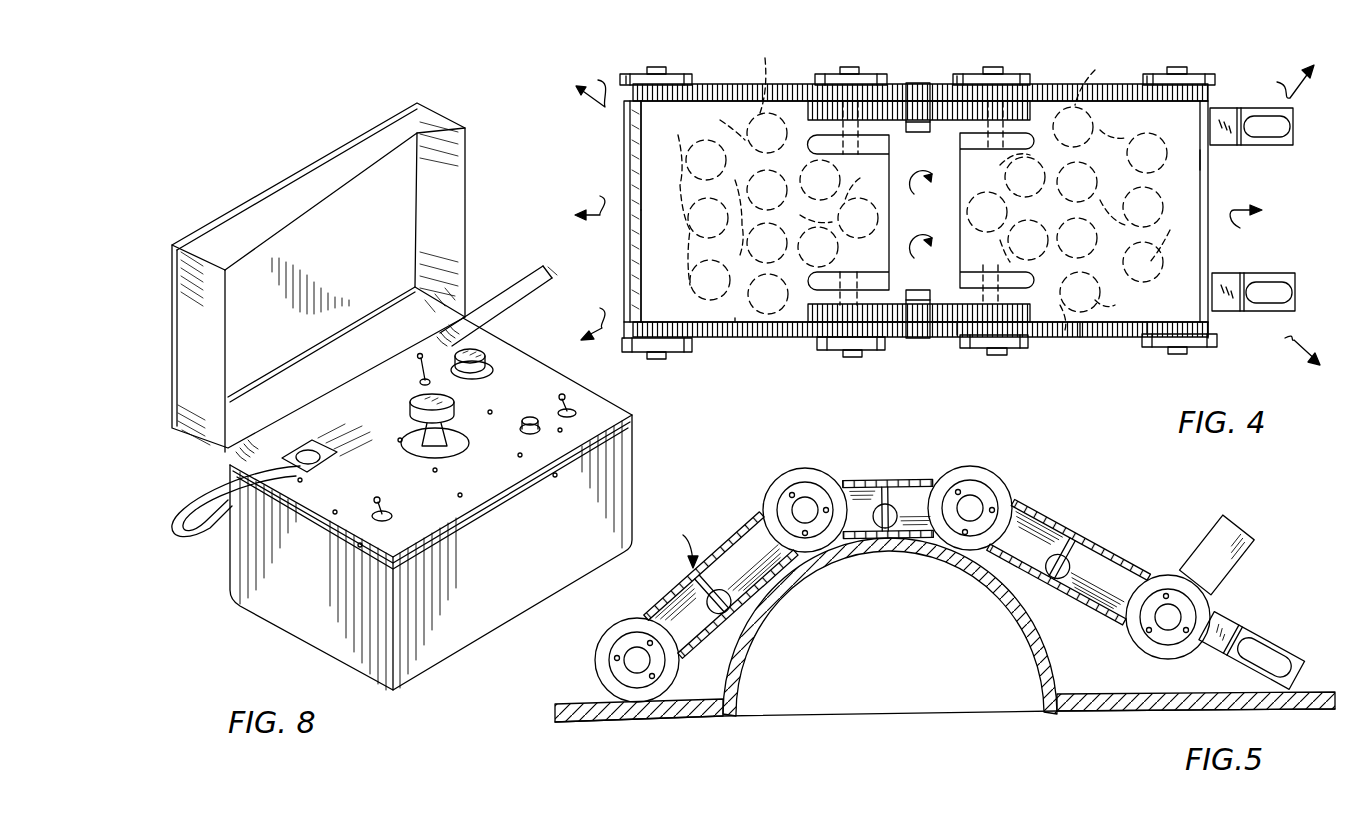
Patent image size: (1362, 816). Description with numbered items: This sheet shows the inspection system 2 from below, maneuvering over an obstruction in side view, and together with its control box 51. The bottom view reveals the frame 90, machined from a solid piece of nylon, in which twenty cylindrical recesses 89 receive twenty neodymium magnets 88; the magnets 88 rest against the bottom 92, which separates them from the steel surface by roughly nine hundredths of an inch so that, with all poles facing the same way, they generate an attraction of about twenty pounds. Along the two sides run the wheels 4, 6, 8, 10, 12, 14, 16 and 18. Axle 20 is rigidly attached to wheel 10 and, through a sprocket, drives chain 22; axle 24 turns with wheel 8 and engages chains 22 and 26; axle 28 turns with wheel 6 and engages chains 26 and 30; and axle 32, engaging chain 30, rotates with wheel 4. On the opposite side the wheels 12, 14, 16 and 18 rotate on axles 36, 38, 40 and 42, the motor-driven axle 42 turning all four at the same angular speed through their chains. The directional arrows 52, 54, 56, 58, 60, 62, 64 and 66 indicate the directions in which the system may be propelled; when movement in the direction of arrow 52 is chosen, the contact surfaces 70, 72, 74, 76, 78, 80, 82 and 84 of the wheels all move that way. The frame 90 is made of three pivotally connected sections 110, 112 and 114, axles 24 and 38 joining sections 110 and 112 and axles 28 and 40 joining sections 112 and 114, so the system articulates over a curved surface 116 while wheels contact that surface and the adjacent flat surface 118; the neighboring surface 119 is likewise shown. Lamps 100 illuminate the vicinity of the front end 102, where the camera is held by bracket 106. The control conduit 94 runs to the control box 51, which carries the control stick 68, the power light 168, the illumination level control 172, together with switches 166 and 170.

In FIG. 4, the inspection system 2 is at (612, 233).
In FIG. 5, the inspection system 2 is at (682, 542).
In FIG. 4, the wheel 4 is at (1212, 345).
In FIG. 5, the wheel 4 is at (1170, 660).
In FIG. 4, the wheel 6 is at (1020, 350).
In FIG. 5, the wheel 6 is at (1012, 494).
In FIG. 4, the wheel 8 is at (872, 350).
In FIG. 5, the wheel 8 is at (806, 468).
In FIG. 4, the wheel 10 is at (628, 354).
In FIG. 5, the wheel 10 is at (637, 620).
In FIG. 4, the wheel 12 is at (690, 76).
In FIG. 4, the wheel 14 is at (822, 76).
In FIG. 5, the wheel 14 is at (830, 478).
In FIG. 4, the wheel 16 is at (1020, 76).
In FIG. 4, the wheel 18 is at (1208, 77).
In FIG. 4, the axle 20 is at (668, 356).
In FIG. 4, the chain 22 is at (735, 340).
In FIG. 4, the axle 24 is at (850, 358).
In FIG. 4, the chain 26 is at (900, 340).
In FIG. 4, the axle 28 is at (990, 355).
In FIG. 4, the chain 30 is at (1080, 336).
In FIG. 4, the axle 32 is at (1180, 355).
In FIG. 4, the axle 36 is at (656, 67).
In FIG. 5, the axle 36 is at (632, 660).
In FIG. 4, the axle 38 is at (850, 67).
In FIG. 5, the axle 38 is at (802, 505).
In FIG. 4, the axle 40 is at (991, 67).
In FIG. 5, the axle 40 is at (975, 500).
In FIG. 4, the axle 42 is at (1178, 67).
In FIG. 5, the axle 42 is at (1162, 620).
In FIG. 8, the control box 51 is at (528, 563).
In FIG. 4, the directional arrow 52 is at (1246, 228).
In FIG. 4, the directional arrow 54 is at (1279, 80).
In FIG. 4, the directional arrow 56 is at (923, 175).
In FIG. 4, the directional arrow 58 is at (589, 314).
In FIG. 4, the directional arrow 60 is at (589, 196).
In FIG. 4, the directional arrow 62 is at (589, 80).
In FIG. 4, the directional arrow 64 is at (925, 262).
In FIG. 4, the directional arrow 66 is at (1289, 349).
In FIG. 8, the control stick 68 is at (410, 408).
In FIG. 4, the contact surface 70 is at (640, 83).
In FIG. 4, the contact surface 72 is at (860, 79).
In FIG. 4, the contact surface 74 is at (985, 76).
In FIG. 4, the contact surface 76 is at (1168, 77).
In FIG. 4, the contact surface 78 is at (670, 360).
In FIG. 5, the contact surface 78 is at (640, 703).
In FIG. 4, the contact surface 80 is at (835, 350).
In FIG. 5, the contact surface 80 is at (823, 550).
In FIG. 4, the contact surface 82 is at (978, 349).
In FIG. 5, the contact surface 82 is at (948, 572).
In FIG. 4, the contact surface 84 is at (1165, 348).
In FIG. 4, the magnets 88 is at (920, 209).
In FIG. 4, the recesses 89 is at (922, 209).
In FIG. 4, the frame 90 is at (637, 157).
In FIG. 4, the bottom 92 is at (637, 282).
In FIG. 8, the control conduit 94 is at (540, 272).
In FIG. 4, the lamps 100 is at (1294, 126).
In FIG. 5, the lamps 100 is at (1290, 650).
In FIG. 4, the front end 102 is at (1202, 160).
In FIG. 5, the bracket 106 is at (1248, 532).
In FIG. 4, the section 110 is at (733, 318).
In FIG. 5, the section 110 is at (733, 538).
In FIG. 4, the section 112 is at (941, 230).
In FIG. 5, the section 112 is at (898, 485).
In FIG. 4, the section 114 is at (1200, 303).
In FIG. 5, the section 114 is at (1060, 527).
In FIG. 5, the curved surface 116 is at (1012, 618).
In FIG. 5, the flat surface 118 is at (707, 712).
In FIG. 5, the base plate 119 is at (1212, 708).
In FIG. 8, the toggle switch 166 is at (392, 512).
In FIG. 8, the power light 168 is at (528, 435).
In FIG. 8, the toggle switch 170 is at (427, 374).
In FIG. 8, the illumination level control 172 is at (482, 379).